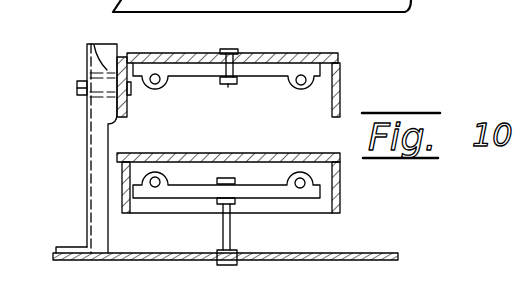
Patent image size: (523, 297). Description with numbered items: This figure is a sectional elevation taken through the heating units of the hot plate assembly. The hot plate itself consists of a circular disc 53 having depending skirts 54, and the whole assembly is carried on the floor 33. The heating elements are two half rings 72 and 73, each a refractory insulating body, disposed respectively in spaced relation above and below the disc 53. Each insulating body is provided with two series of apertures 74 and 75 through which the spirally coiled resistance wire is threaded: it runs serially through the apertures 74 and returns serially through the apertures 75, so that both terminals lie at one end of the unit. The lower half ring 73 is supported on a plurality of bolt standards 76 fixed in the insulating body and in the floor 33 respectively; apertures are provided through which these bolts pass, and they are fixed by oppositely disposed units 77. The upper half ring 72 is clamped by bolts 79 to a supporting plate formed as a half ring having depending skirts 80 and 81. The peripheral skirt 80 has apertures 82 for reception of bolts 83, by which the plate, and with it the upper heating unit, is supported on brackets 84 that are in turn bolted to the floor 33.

The floor 33 is at (365, 255).
The circular disc 53 is at (253, 143).
The depending skirts 54 is at (122, 192).
The half ring 72 is at (263, 72).
The half ring 73 is at (262, 192).
The apertures 74 is at (157, 88).
The apertures 75 is at (303, 88).
The bolt standards 76 is at (220, 230).
The units 77 is at (238, 211).
The bolts 79 is at (227, 51).
The peripheral skirt 80 is at (119, 101).
The depending skirt 81 is at (342, 90).
The apertures 82 is at (95, 42).
The bolts 83 is at (77, 82).
The brackets 84 is at (89, 150).